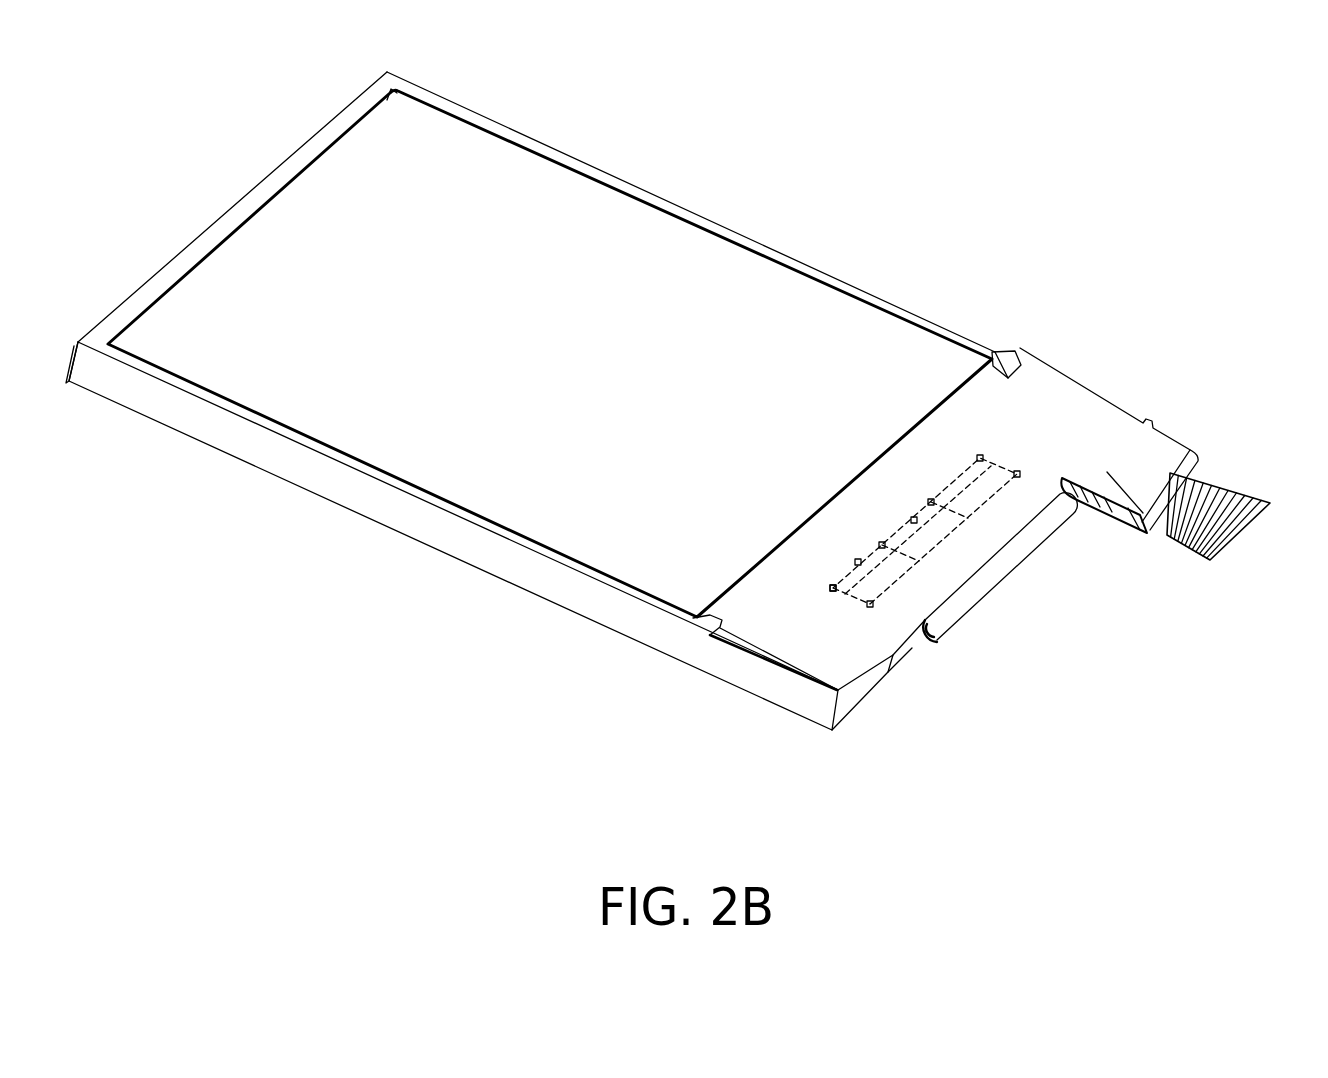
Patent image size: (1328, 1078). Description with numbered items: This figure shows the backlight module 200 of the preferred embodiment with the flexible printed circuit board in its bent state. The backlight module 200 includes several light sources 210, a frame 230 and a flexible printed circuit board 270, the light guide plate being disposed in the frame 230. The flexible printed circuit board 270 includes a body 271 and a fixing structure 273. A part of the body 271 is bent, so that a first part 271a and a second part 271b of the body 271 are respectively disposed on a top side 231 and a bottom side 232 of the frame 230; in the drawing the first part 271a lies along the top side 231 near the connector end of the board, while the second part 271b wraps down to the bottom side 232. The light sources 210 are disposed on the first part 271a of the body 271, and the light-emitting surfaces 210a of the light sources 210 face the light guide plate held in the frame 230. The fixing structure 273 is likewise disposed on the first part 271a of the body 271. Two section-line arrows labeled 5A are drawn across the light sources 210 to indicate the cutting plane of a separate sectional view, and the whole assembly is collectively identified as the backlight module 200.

The backlight module 200 is at (1327, 71).
The frame 230 is at (467, 543).
The top side 231 is at (936, 316).
The bottom side 232 is at (613, 636).
The light sources 210 is at (1005, 494).
The light-emitting surfaces 210a is at (916, 516).
The section line 5A is at (1020, 447).
The flexible printed circuit board 270 is at (1222, 724).
The body 271 is at (1167, 540).
The first part 271a is at (1151, 416).
The second part 271b is at (907, 662).
The fixing structure 273 is at (1068, 518).